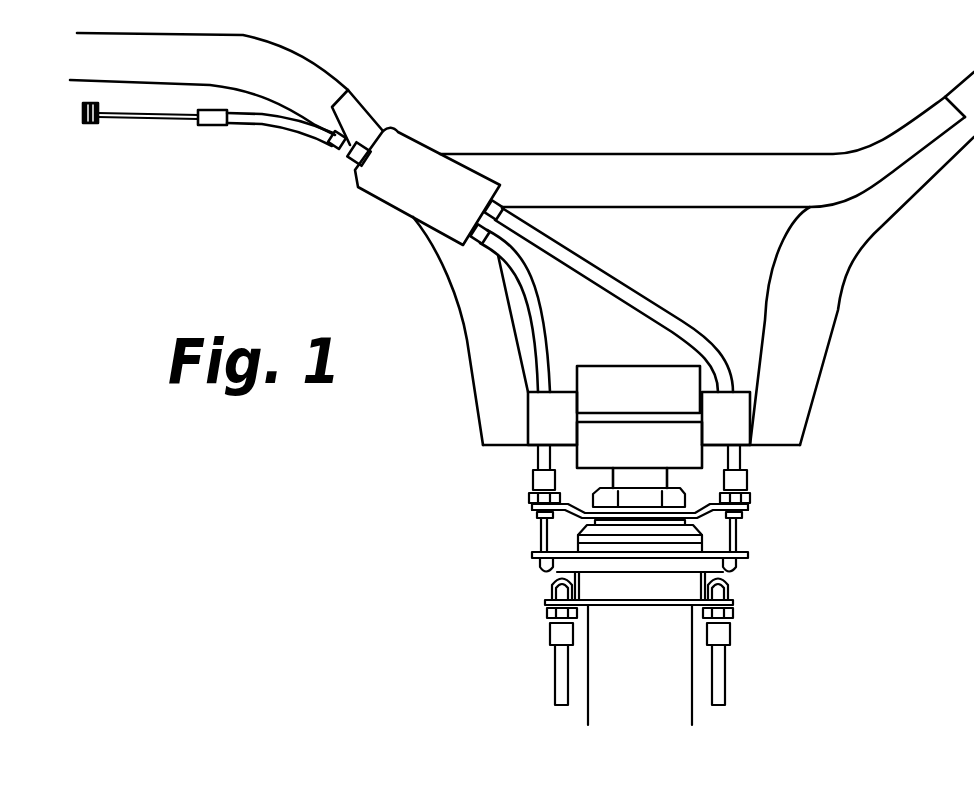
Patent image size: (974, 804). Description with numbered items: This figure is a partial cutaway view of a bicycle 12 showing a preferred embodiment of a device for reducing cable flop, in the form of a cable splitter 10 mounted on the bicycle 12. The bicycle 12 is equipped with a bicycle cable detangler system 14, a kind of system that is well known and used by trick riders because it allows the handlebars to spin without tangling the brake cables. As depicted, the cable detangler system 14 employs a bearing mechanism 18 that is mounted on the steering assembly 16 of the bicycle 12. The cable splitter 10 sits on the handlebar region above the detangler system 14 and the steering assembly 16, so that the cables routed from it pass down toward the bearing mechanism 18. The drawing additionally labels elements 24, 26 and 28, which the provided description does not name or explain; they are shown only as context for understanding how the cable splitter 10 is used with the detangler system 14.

The cable splitter 10 is at (408, 124).
The bicycle 12 is at (650, 165).
The bicycle cable detangler system 14 is at (754, 531).
The steering assembly 16 is at (678, 705).
The bearing mechanism 18 is at (728, 573).
The cable 24 is at (650, 298).
The cable 26 is at (547, 335).
The control housing 28 is at (380, 188).